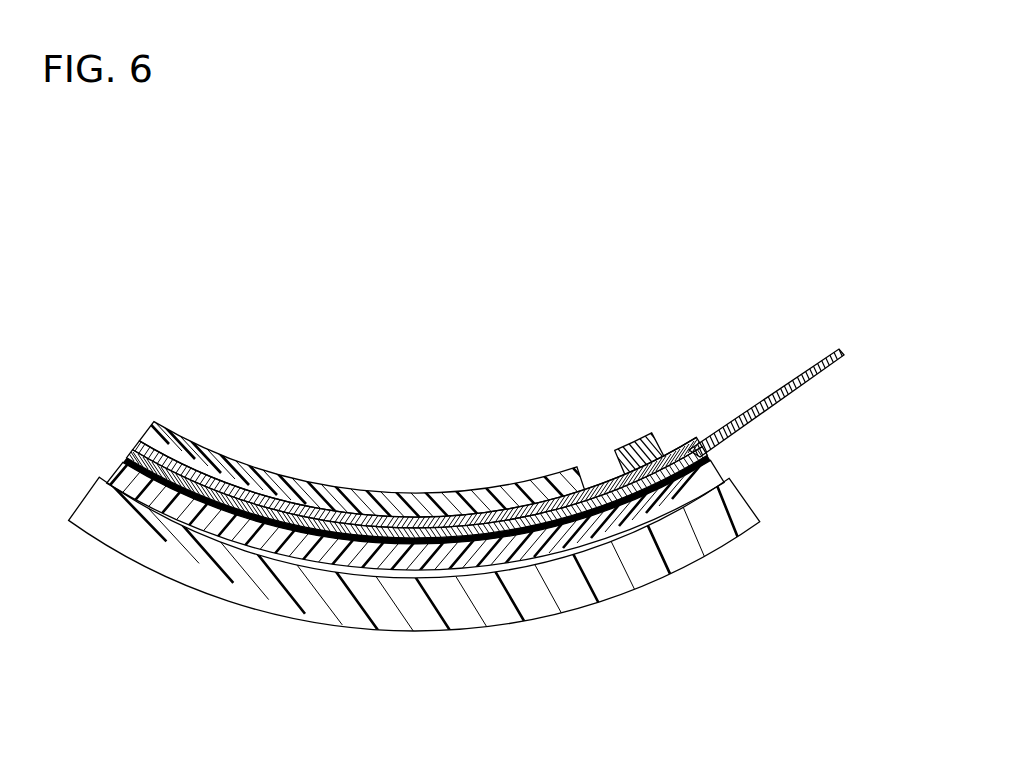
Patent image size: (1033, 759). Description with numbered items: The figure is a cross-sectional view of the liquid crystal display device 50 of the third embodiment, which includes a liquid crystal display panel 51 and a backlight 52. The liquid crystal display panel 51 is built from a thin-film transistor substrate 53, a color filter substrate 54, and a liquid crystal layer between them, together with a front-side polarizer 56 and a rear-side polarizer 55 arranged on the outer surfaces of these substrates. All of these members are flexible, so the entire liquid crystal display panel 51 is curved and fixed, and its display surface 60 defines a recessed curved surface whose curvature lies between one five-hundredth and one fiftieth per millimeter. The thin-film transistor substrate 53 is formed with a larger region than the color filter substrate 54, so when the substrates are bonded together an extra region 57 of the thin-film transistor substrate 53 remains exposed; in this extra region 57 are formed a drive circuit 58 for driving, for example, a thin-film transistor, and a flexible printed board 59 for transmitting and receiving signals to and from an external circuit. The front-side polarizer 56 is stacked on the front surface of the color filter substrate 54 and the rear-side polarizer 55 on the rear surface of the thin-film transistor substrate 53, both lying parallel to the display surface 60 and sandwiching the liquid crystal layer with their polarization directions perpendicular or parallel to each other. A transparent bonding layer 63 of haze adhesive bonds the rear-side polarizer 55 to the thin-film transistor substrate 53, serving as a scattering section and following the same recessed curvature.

The liquid crystal display device 50 is at (431, 367).
The liquid crystal display panel 51 is at (155, 414).
The backlight 52 is at (738, 507).
The thin-film transistor substrate 53 is at (703, 448).
The color filter substrate 54 is at (600, 492).
The rear-side polarizer 55 is at (716, 472).
The front-side polarizer 56 is at (488, 500).
The extra region 57 is at (662, 460).
The drive circuit 58 is at (632, 447).
The flexible printed board 59 is at (818, 360).
The display surface 60 is at (343, 485).
The transparent bonding layer 63 is at (712, 457).